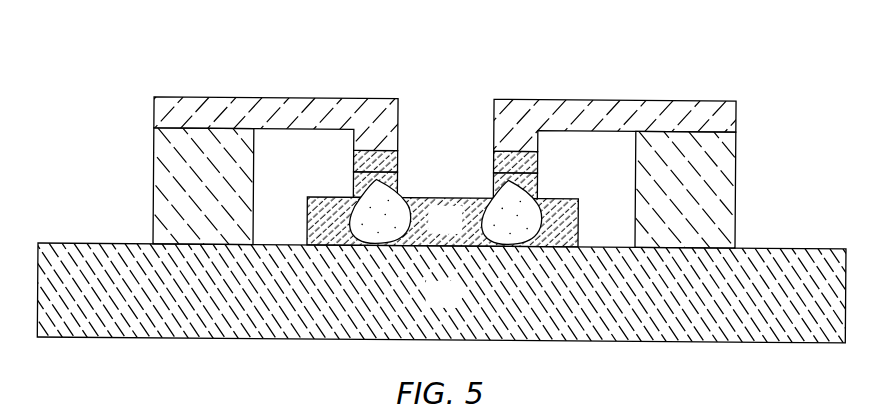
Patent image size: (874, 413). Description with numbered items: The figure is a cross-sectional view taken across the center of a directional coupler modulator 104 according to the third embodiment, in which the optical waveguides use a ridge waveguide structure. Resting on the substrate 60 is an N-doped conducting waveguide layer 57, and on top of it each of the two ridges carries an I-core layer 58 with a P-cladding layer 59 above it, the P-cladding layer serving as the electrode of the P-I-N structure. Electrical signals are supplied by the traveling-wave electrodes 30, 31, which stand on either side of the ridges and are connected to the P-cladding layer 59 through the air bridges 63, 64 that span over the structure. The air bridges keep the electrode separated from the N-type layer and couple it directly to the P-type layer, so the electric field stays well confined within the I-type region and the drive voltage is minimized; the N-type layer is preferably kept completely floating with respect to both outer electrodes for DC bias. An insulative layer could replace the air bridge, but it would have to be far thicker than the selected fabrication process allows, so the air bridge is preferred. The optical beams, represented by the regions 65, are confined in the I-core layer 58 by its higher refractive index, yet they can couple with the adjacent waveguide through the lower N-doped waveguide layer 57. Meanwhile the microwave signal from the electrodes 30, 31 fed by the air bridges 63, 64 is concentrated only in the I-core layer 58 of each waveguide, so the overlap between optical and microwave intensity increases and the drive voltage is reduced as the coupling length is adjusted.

The bonded assembly 104 is at (102, 80).
The air bridge 63 is at (284, 96).
The air bridge 64 is at (605, 96).
The optical beam region 65 is at (508, 173).
The P-cladding layer 59 is at (496, 156).
The I-core layer 58 is at (494, 181).
The N-doped conducting waveguide layer 57 is at (432, 227).
The substrate 60 is at (456, 301).
The traveling-wave electrode 30 is at (153, 185).
The traveling-wave electrode 31 is at (735, 188).